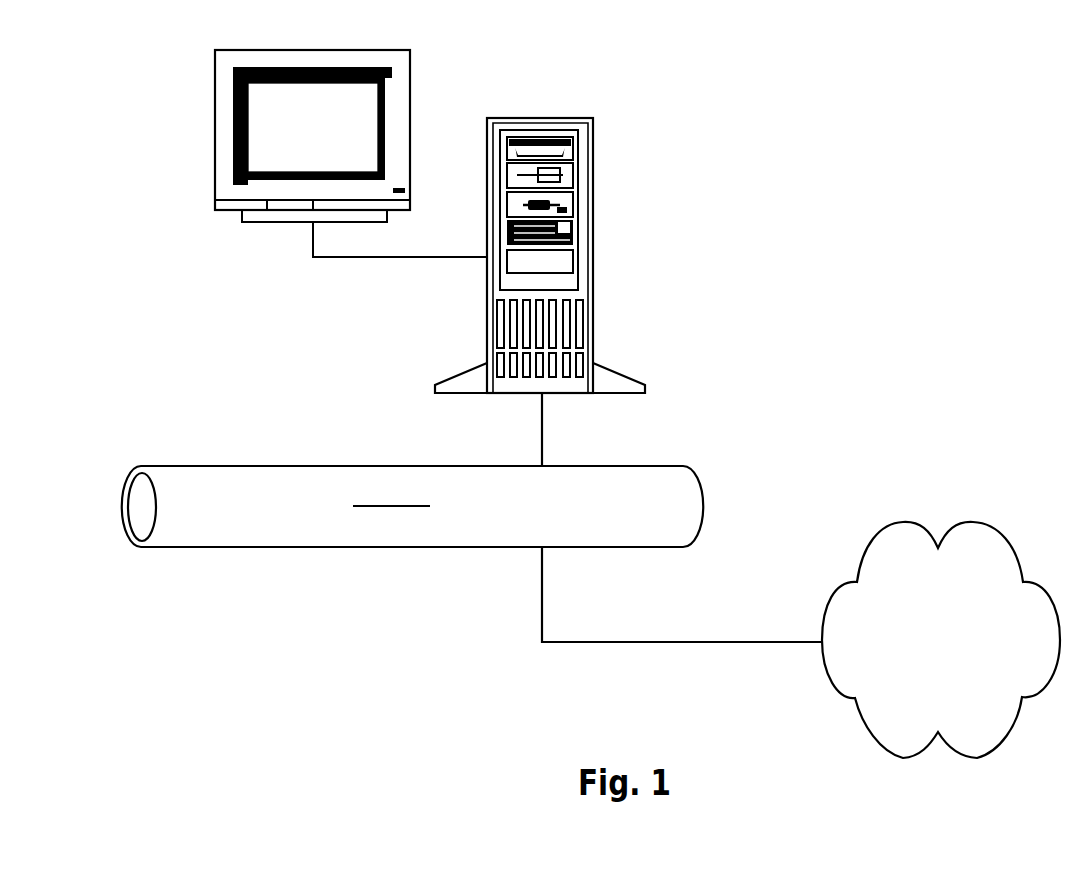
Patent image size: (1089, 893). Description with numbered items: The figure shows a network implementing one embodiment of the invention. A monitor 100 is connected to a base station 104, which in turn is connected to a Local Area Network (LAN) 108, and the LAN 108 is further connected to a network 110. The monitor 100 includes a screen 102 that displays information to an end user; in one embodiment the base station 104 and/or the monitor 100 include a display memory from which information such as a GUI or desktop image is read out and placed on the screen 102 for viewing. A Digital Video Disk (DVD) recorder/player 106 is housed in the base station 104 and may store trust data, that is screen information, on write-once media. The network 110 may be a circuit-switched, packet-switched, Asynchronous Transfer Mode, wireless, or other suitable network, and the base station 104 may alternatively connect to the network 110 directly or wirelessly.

The monitor 100 is at (412, 93).
The screen 102 is at (266, 153).
The base station 104 is at (588, 123).
The DVD recorder/player 106 is at (594, 206).
The Local Area Network (LAN) 108 is at (227, 467).
The network 110 is at (910, 525).